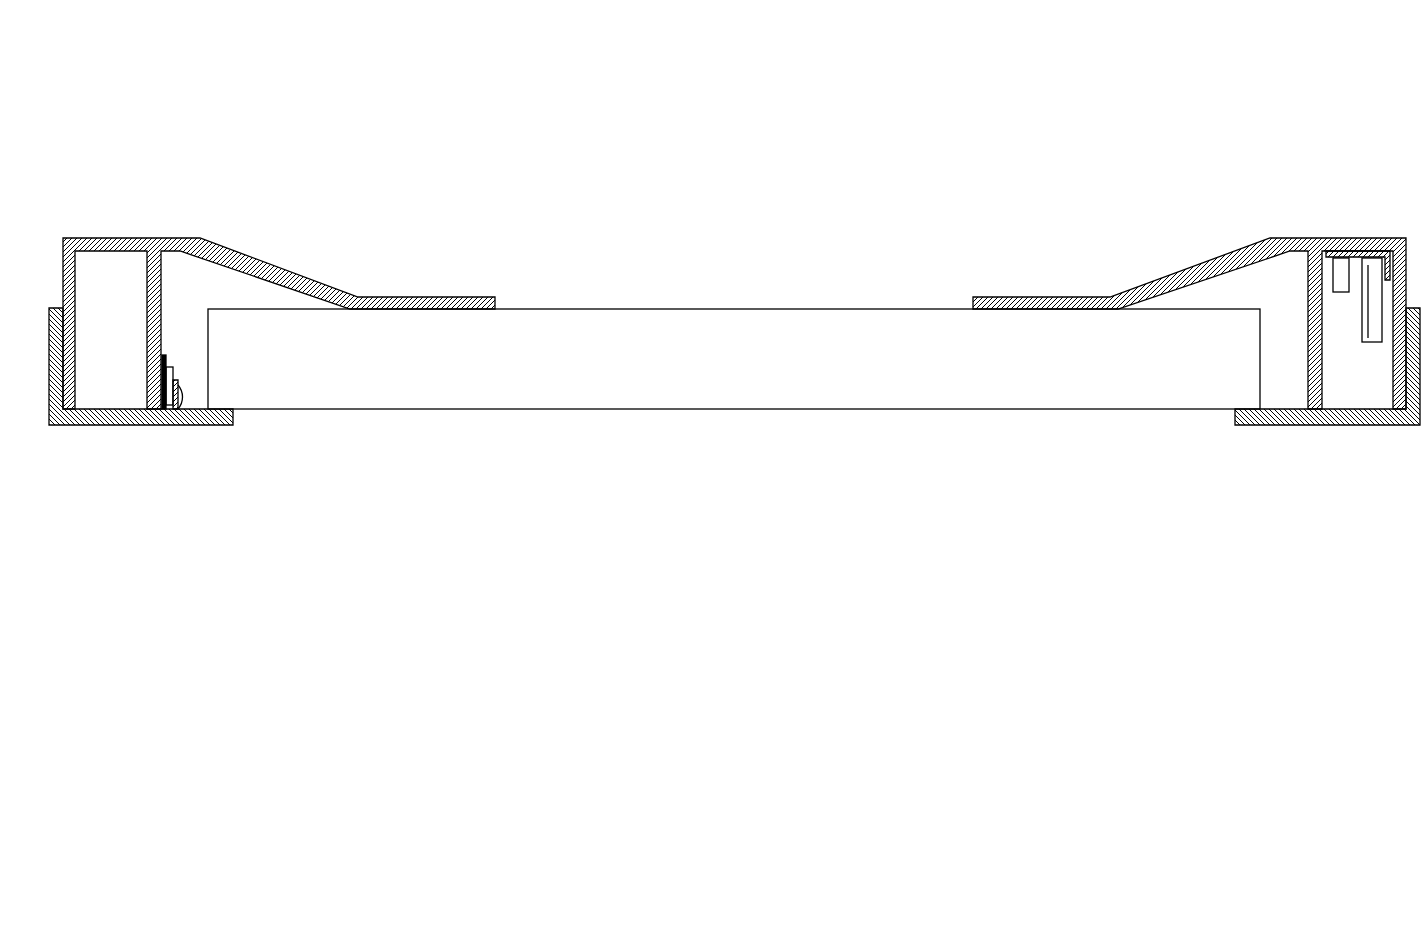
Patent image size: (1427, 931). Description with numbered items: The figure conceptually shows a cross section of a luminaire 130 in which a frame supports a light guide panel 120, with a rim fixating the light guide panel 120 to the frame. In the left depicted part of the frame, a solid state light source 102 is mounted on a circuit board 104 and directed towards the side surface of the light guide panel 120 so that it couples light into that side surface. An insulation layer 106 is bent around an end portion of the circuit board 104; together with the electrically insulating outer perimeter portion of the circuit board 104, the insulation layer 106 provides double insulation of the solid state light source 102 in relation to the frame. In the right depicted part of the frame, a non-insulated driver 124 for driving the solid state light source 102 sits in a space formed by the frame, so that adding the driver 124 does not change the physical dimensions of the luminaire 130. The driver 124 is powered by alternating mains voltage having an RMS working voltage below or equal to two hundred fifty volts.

The luminaire 130 is at (828, 100).
The solid state light source 102 is at (178, 385).
The circuit board 104 is at (174, 368).
The insulation layer 106 is at (170, 400).
The light guide panel 120 is at (720, 410).
The non-insulated driver 124 is at (1352, 258).